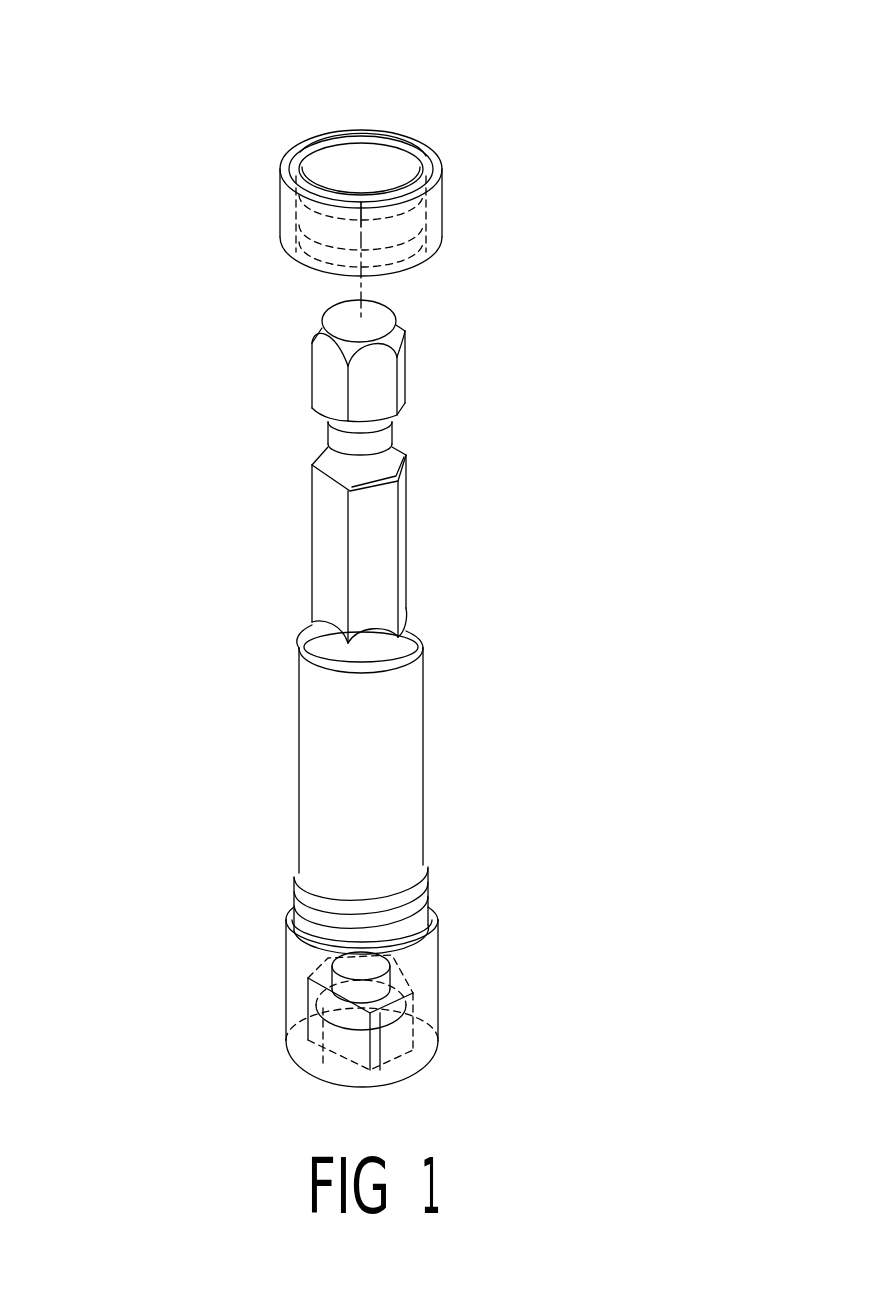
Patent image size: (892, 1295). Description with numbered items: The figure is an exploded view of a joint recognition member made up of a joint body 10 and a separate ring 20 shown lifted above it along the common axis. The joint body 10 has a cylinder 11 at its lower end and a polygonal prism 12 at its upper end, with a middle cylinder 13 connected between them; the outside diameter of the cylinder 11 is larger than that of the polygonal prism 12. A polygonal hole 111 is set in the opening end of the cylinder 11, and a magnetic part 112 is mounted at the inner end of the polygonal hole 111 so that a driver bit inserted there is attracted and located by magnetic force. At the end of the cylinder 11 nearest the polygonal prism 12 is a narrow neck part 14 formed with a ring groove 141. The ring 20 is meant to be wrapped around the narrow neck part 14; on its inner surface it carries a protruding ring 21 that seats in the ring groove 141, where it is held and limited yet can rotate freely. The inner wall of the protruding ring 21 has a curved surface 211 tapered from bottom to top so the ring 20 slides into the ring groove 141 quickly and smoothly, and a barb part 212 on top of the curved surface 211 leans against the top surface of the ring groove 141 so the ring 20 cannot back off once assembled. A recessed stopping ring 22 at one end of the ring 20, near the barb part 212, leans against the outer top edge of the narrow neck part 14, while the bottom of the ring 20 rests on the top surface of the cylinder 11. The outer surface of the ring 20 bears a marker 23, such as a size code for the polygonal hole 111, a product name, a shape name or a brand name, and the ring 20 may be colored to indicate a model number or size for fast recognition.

The joint body 10 is at (273, 600).
The cylinder 11 is at (297, 967).
The polygonal hole 111 is at (386, 1043).
The magnetic part 112 is at (332, 1041).
The polygonal prism 12 is at (378, 537).
The middle cylinder 13 is at (357, 748).
The narrow neck part 14 is at (408, 947).
The ring groove 141 is at (329, 932).
The ring 20 is at (432, 206).
The protruding ring 21 is at (329, 141).
The curved surface 211 is at (392, 168).
The barb part 212 is at (365, 152).
The recessed stopping ring 22 is at (292, 161).
The marker 23 is at (287, 214).